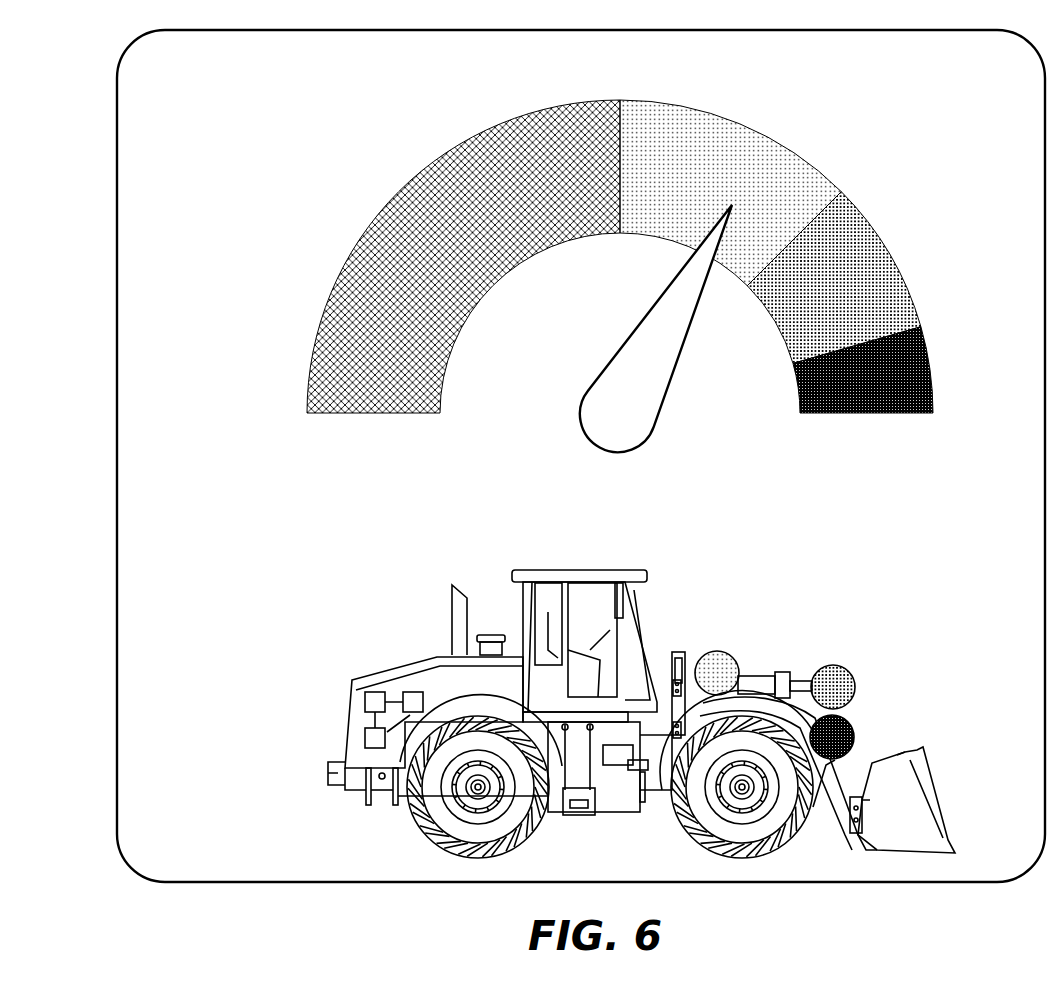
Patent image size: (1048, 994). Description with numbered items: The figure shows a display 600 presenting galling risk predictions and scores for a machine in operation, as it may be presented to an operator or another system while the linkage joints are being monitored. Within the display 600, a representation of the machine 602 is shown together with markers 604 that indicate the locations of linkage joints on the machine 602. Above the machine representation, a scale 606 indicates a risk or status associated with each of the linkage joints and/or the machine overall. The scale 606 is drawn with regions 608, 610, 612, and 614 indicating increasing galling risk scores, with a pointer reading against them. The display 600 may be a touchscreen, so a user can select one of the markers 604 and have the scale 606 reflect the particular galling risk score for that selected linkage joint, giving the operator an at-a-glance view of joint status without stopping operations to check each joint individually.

The display 600 is at (581, 456).
The machine 602 is at (365, 605).
The markers 604 is at (721, 652).
The scale 606 is at (645, 264).
The region 608 is at (417, 238).
The region 610 is at (685, 152).
The region 612 is at (870, 282).
The region 614 is at (915, 378).